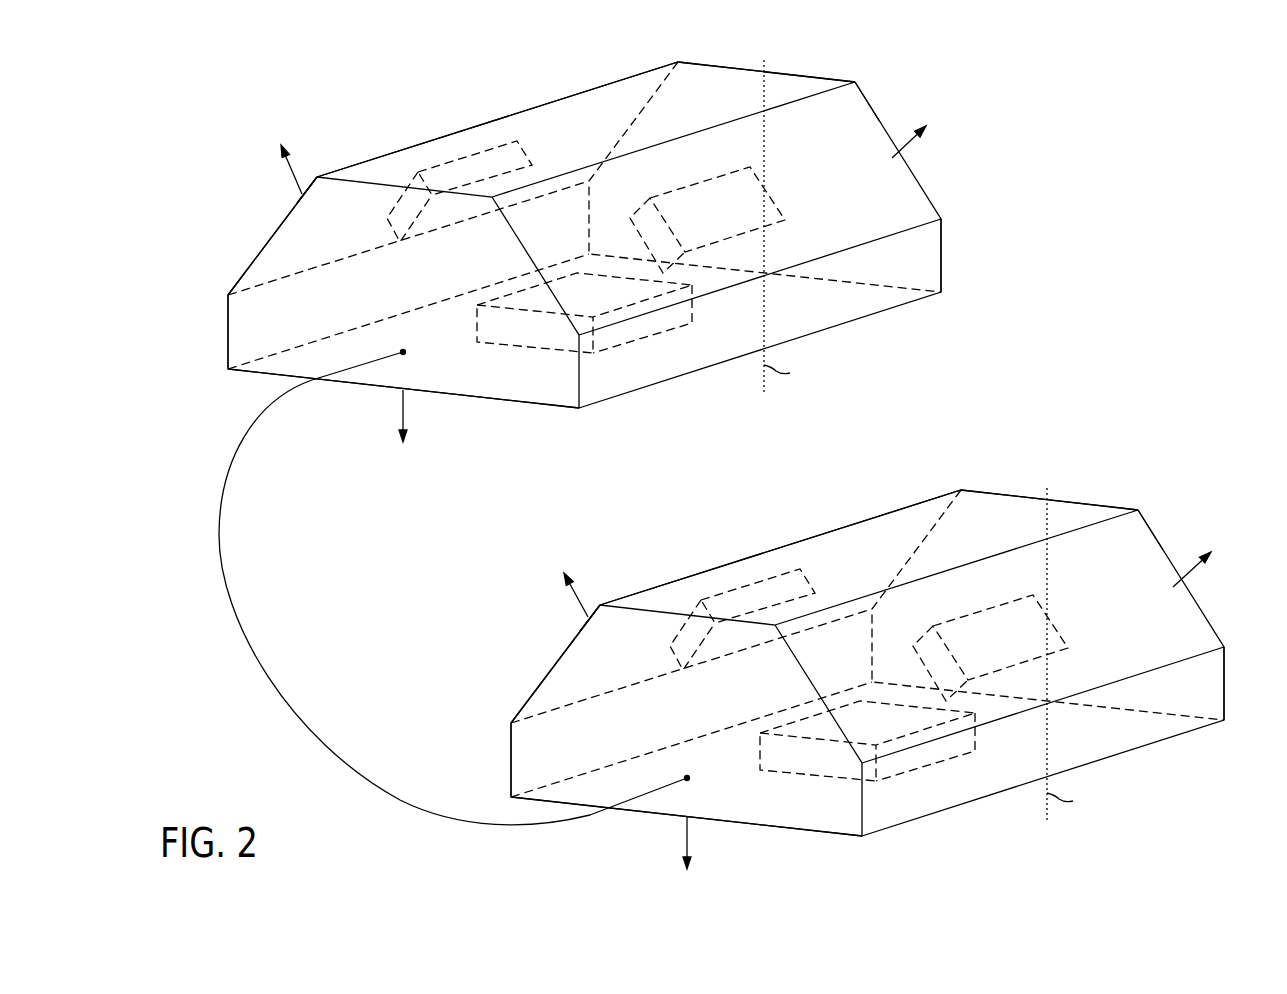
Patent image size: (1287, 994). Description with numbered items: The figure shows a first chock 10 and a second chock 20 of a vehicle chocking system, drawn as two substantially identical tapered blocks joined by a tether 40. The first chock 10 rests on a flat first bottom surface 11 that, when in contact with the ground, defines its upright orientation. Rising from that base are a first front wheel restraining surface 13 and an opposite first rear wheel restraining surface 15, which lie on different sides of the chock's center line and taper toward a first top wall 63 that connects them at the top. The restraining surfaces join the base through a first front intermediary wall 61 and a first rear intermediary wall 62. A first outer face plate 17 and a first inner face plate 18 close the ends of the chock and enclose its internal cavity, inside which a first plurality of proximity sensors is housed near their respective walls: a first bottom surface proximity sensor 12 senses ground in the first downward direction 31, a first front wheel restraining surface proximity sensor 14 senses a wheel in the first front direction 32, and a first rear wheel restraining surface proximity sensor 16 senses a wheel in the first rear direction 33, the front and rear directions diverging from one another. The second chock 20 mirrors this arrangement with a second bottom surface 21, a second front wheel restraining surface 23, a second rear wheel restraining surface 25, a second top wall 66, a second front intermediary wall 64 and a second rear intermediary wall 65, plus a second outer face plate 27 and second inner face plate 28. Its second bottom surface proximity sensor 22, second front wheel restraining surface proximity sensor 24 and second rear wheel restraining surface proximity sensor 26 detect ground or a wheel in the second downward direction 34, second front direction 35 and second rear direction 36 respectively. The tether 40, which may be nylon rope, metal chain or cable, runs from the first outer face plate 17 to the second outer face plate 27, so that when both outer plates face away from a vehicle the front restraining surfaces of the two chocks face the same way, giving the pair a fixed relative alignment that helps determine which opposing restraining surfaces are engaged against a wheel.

The first chock 10 is at (362, 118).
The first bottom surface 11 is at (556, 410).
The first bottom surface proximity sensor 12 is at (693, 305).
The first front wheel restraining surface 13 is at (297, 203).
The first front wheel restraining surface proximity sensor 14 is at (533, 163).
The first rear wheel restraining surface 15 is at (860, 105).
The first rear wheel restraining surface proximity sensor 16 is at (767, 192).
The first outer face plate 17 is at (268, 244).
The first inner face plate 18 is at (807, 73).
The first downward direction 31 is at (405, 410).
The first front direction 32 is at (297, 170).
The first rear direction 33 is at (907, 145).
The tether 40 is at (222, 540).
The first front intermediary wall 61 is at (228, 328).
The first rear intermediary wall 62 is at (943, 257).
The first top wall 63 is at (723, 78).
The second chock 20 is at (702, 537).
The second bottom surface 21 is at (785, 832).
The second bottom surface proximity sensor 22 is at (978, 730).
The second front wheel restraining surface 23 is at (578, 633).
The second front wheel restraining surface proximity sensor 24 is at (813, 592).
The second rear wheel restraining surface 25 is at (1143, 532).
The second rear wheel restraining surface proximity sensor 26 is at (1050, 620).
The second outer face plate 27 is at (557, 672).
The second inner face plate 28 is at (1090, 500).
The second downward direction 34 is at (690, 833).
The second front direction 35 is at (582, 592).
The second rear direction 36 is at (1193, 572).
The second front intermediary wall 64 is at (510, 754).
The second rear intermediary wall 65 is at (1213, 682).
The second top wall 66 is at (1005, 505).